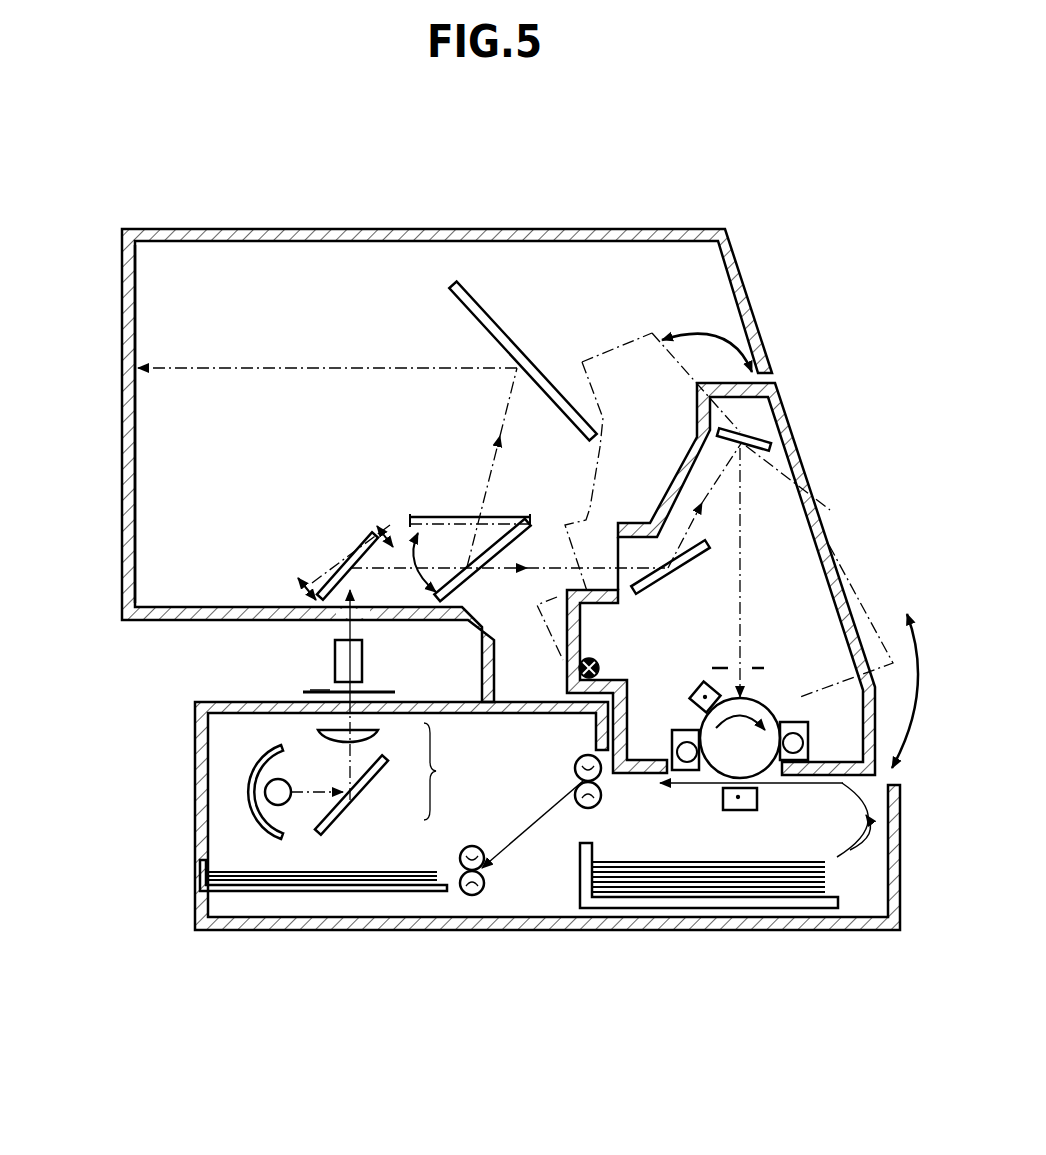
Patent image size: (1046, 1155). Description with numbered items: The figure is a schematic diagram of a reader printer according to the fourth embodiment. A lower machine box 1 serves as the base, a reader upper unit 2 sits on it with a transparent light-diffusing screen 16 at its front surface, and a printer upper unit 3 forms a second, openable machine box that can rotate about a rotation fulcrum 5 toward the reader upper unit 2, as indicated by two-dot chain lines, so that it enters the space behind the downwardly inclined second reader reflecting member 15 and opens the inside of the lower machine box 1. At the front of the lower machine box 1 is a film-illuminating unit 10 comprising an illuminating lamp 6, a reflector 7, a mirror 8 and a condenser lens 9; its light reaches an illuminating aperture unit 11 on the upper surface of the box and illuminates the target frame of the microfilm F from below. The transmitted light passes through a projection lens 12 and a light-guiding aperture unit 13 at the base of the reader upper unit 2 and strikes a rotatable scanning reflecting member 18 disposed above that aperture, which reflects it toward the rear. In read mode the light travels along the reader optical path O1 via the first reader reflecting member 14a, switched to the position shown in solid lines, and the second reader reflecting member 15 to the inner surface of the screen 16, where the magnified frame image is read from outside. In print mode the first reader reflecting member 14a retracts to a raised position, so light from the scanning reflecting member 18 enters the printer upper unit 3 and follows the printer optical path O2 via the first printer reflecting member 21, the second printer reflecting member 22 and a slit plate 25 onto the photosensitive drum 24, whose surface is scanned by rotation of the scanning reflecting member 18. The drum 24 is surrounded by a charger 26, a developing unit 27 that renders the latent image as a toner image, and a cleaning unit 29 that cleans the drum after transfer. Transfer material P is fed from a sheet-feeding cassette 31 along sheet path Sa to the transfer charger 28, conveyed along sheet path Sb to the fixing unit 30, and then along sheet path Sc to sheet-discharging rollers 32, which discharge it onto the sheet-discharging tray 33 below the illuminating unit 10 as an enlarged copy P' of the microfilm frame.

The lower machine box 1 is at (195, 805).
The reader upper unit 2 is at (358, 229).
The printer upper unit 3 is at (612, 349).
The rotation fulcrum 5 is at (597, 660).
The illuminating lamp 6 is at (290, 786).
The reflector 7 is at (268, 757).
The reflecting member 8 is at (374, 791).
The condenser lens 9 is at (378, 735).
The film-illuminating unit 10 is at (476, 790).
The illuminating aperture unit 11 is at (395, 691).
The projection lens 12 is at (363, 663).
The light-guiding aperture unit 13 is at (330, 618).
The first reader reflecting member 14a is at (441, 515).
The second reader reflecting member 15 is at (456, 298).
The screen 16 is at (122, 300).
The scanning reflecting member 18 is at (338, 568).
The first printer reflecting member 21 is at (694, 562).
The second printer reflecting member 22 is at (746, 440).
The photosensitive drum 24 is at (768, 700).
The slit plate 25 is at (757, 668).
The charger 26 is at (712, 688).
The developing unit 27 is at (812, 735).
The transfer charger 28 is at (758, 808).
The cleaning unit 29 is at (674, 742).
The fixing unit 30 is at (600, 796).
The sheet-feeding cassette 31 is at (707, 905).
The sheet-discharging rollers 32 is at (460, 847).
The sheet-discharging tray 33 is at (343, 888).
The microfilm F is at (320, 690).
The reader optical path O1 is at (505, 415).
The printer optical path O2 is at (717, 523).
The transfer material P is at (708, 858).
The enlarged copy P' is at (322, 852).
The sheet path Sa is at (847, 793).
The sheet path Sb is at (683, 787).
The sheet path Sc is at (562, 800).